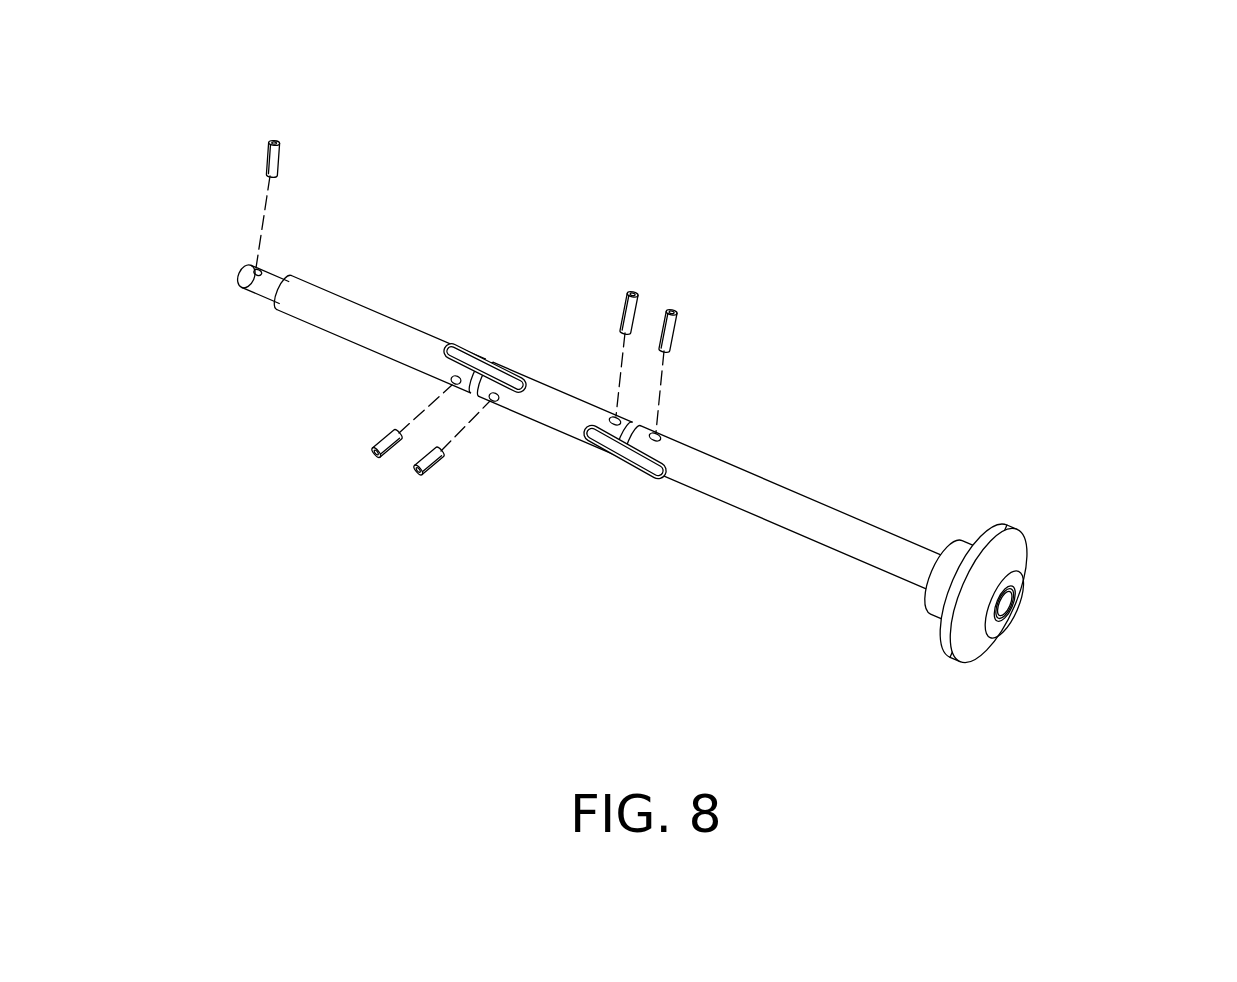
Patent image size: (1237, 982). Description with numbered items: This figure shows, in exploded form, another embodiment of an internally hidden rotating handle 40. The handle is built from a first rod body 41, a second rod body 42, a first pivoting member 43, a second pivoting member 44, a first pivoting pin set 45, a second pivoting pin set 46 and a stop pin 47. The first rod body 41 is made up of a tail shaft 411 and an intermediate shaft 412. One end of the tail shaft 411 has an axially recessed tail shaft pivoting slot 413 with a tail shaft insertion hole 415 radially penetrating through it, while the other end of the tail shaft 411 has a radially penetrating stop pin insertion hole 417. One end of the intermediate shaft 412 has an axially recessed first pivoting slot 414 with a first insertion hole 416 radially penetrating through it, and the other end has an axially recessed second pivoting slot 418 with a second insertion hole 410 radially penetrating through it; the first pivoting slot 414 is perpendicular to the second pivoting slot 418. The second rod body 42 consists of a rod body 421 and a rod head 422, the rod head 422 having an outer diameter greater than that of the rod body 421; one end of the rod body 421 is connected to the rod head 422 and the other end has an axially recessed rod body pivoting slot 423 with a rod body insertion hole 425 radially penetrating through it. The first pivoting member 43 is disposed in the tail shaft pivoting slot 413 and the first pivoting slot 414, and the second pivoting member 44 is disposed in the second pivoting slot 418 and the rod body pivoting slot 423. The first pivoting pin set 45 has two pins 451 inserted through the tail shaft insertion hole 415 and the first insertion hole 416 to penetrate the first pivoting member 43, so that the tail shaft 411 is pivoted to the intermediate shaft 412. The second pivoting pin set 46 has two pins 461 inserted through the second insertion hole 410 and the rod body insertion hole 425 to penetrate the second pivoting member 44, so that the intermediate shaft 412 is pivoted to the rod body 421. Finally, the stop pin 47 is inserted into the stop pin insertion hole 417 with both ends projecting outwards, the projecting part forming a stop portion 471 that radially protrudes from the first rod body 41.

The internally hidden rotating handle 40 is at (1163, 133).
The first rod body 41 is at (241, 436).
The second insertion hole 410 is at (613, 418).
The tail shaft 411 is at (323, 315).
The intermediate shaft 412 is at (543, 415).
The tail shaft pivoting slot 413 is at (466, 350).
The first pivoting slot 414 is at (522, 367).
The tail shaft insertion hole 415 is at (452, 381).
The first insertion hole 416 is at (493, 404).
The stop pin insertion hole 417 is at (258, 302).
The second pivoting slot 418 is at (596, 453).
The second rod body 42 is at (1050, 397).
The rod body 421 is at (835, 528).
The rod head 422 is at (1013, 537).
The rod body pivoting slot 423 is at (665, 476).
The rod body insertion hole 425 is at (662, 437).
The first pivoting member 43 is at (493, 372).
The second pivoting member 44 is at (638, 453).
The first pivoting pin set 45 is at (352, 595).
The pin 451 is at (375, 456).
The second pivoting pin set 46 is at (747, 197).
The pin 461 is at (629, 296).
The stop pin 47 is at (268, 162).
The stop portion 471 is at (276, 146).